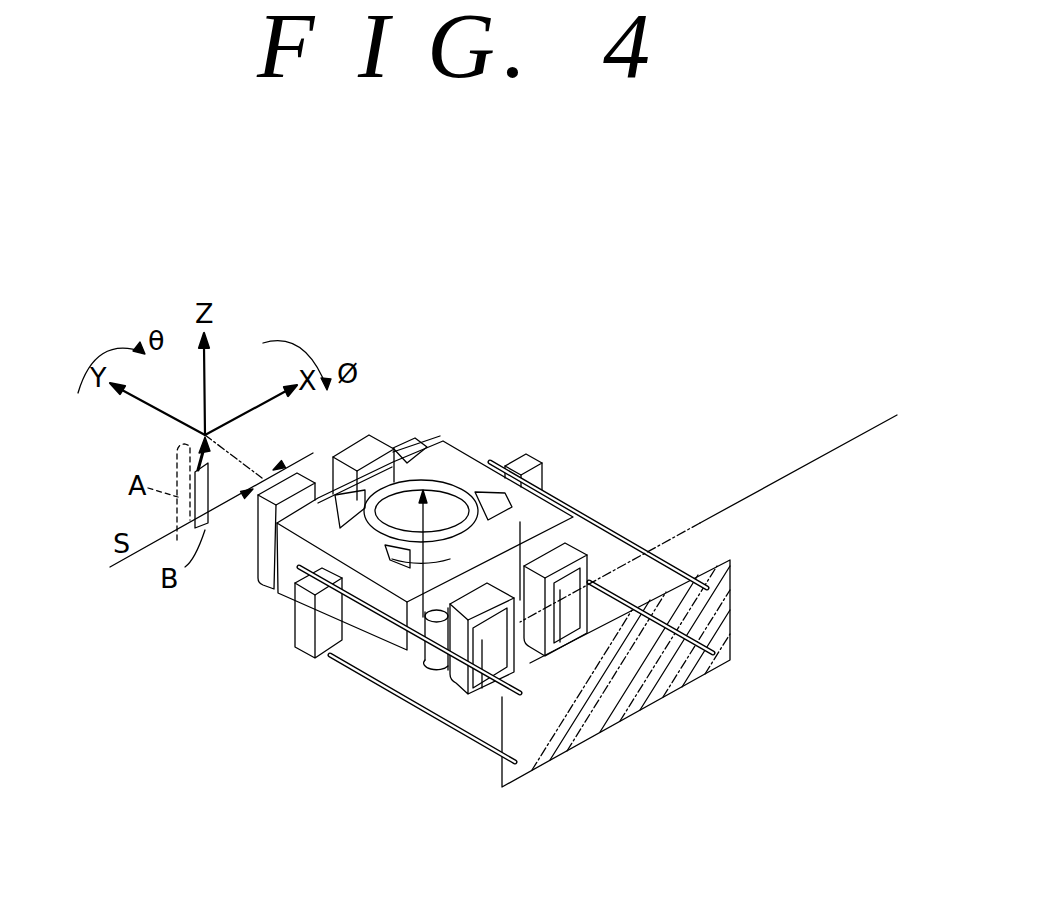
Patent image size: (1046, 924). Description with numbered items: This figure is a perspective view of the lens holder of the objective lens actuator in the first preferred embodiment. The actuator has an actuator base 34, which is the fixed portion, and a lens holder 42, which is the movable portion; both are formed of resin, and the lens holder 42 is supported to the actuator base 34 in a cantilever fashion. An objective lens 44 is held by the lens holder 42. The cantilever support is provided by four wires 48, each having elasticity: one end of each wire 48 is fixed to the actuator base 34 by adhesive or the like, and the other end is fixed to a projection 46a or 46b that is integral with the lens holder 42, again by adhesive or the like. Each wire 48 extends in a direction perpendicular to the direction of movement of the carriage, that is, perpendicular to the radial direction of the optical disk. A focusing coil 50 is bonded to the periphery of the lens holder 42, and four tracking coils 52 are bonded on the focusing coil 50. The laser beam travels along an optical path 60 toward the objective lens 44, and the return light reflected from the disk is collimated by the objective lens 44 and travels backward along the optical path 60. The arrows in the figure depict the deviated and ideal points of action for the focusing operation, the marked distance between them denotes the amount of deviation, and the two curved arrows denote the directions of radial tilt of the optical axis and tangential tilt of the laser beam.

The actuator base 34 is at (642, 703).
The lens holder 42 is at (478, 445).
The objective lens 44 is at (417, 490).
The projection 46a is at (303, 617).
The projection 46b is at (520, 462).
The wires 48 is at (362, 672).
The focusing coil 50 is at (333, 477).
The tracking coils 52 is at (367, 440).
The optical path 60 is at (853, 437).